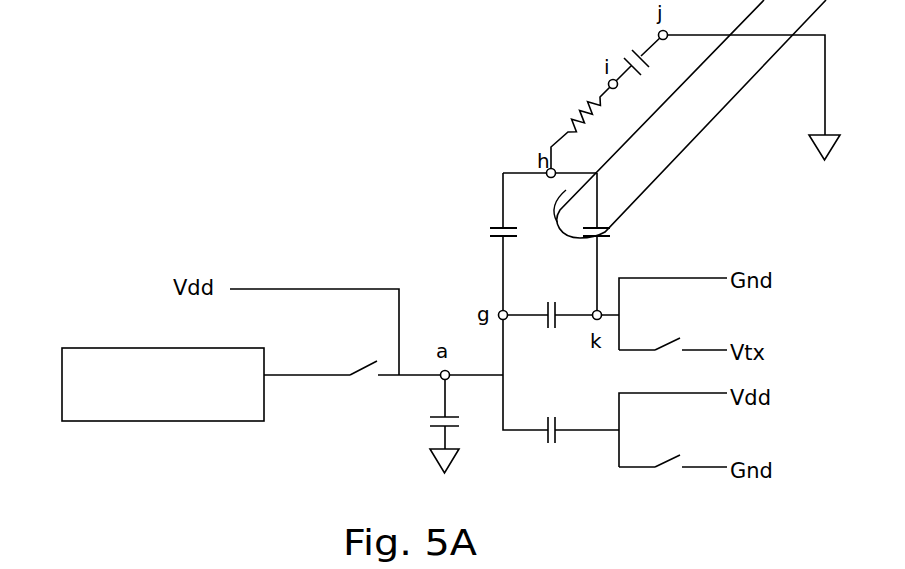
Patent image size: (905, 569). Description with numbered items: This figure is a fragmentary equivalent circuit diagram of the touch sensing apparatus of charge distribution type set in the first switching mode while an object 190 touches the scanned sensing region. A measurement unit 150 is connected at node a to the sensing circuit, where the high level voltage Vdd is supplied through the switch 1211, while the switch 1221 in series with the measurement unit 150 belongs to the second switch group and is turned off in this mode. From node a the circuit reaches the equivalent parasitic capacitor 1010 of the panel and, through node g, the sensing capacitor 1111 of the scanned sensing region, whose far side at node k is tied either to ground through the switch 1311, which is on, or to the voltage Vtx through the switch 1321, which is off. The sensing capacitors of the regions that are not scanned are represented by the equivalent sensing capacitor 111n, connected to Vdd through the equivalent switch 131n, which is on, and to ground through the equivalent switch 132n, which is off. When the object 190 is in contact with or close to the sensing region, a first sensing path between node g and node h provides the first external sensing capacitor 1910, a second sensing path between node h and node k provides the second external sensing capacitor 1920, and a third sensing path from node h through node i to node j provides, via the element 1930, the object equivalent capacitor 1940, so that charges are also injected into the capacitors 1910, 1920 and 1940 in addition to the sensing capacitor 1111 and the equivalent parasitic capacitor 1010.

The measurement unit 150 is at (120, 348).
The switch 1211 is at (366, 288).
The switch 1221 is at (366, 367).
The equivalent parasitic capacitor 1010 is at (425, 422).
The first external sensing capacitor 1910 is at (488, 232).
The second external sensing capacitor 1920 is at (614, 236).
The sensing capacitor 1111 is at (551, 300).
The equivalent sensing capacitor 111n is at (551, 414).
The switch 1311 is at (640, 278).
The switch 1321 is at (672, 343).
The equivalent switch 131n is at (640, 393).
The equivalent switch 132n is at (672, 459).
The resistor 1930 is at (573, 110).
The object equivalent capacitor 1940 is at (628, 55).
The object 190 is at (678, 128).